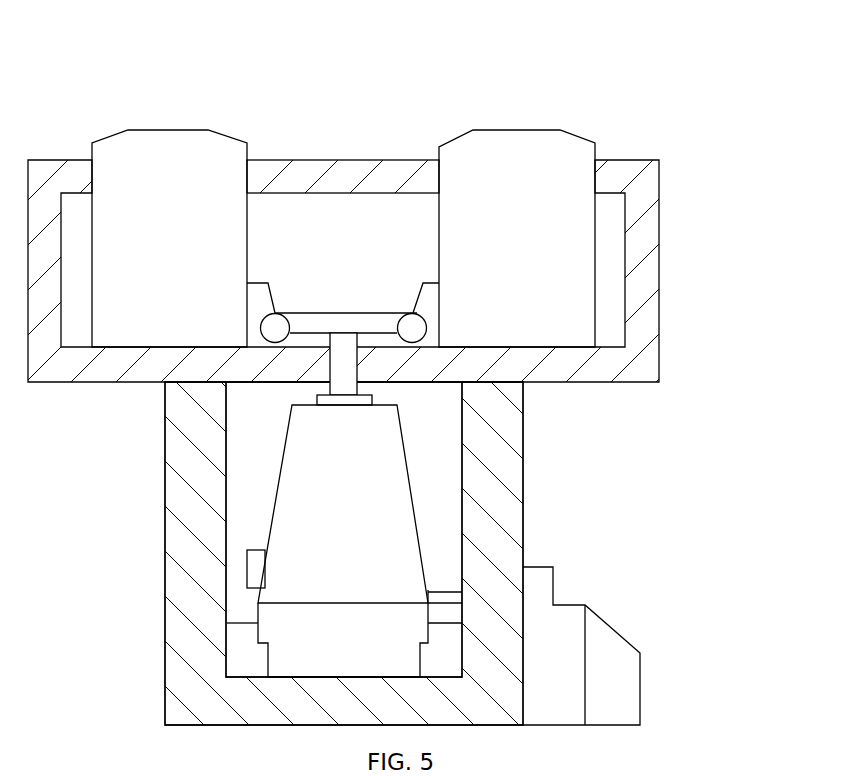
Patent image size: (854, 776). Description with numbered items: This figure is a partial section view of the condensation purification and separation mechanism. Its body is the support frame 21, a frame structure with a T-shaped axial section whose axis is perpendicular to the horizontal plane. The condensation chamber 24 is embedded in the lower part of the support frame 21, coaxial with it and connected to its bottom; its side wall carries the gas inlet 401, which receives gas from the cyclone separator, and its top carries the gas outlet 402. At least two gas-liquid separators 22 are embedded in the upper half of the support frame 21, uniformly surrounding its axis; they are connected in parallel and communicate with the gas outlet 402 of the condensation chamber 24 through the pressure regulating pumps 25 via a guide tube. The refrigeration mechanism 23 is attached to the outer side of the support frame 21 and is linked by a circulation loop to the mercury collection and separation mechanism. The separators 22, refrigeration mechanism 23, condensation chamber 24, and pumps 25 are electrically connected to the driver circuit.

The support frame 21 is at (166, 550).
The gas-liquid separators 22 is at (157, 302).
The refrigeration mechanism 23 is at (552, 645).
The condensation chamber 24 is at (373, 578).
The pressure regulating pumps 25 is at (427, 300).
The gas inlet 401 is at (258, 563).
The gas outlet 402 is at (363, 397).